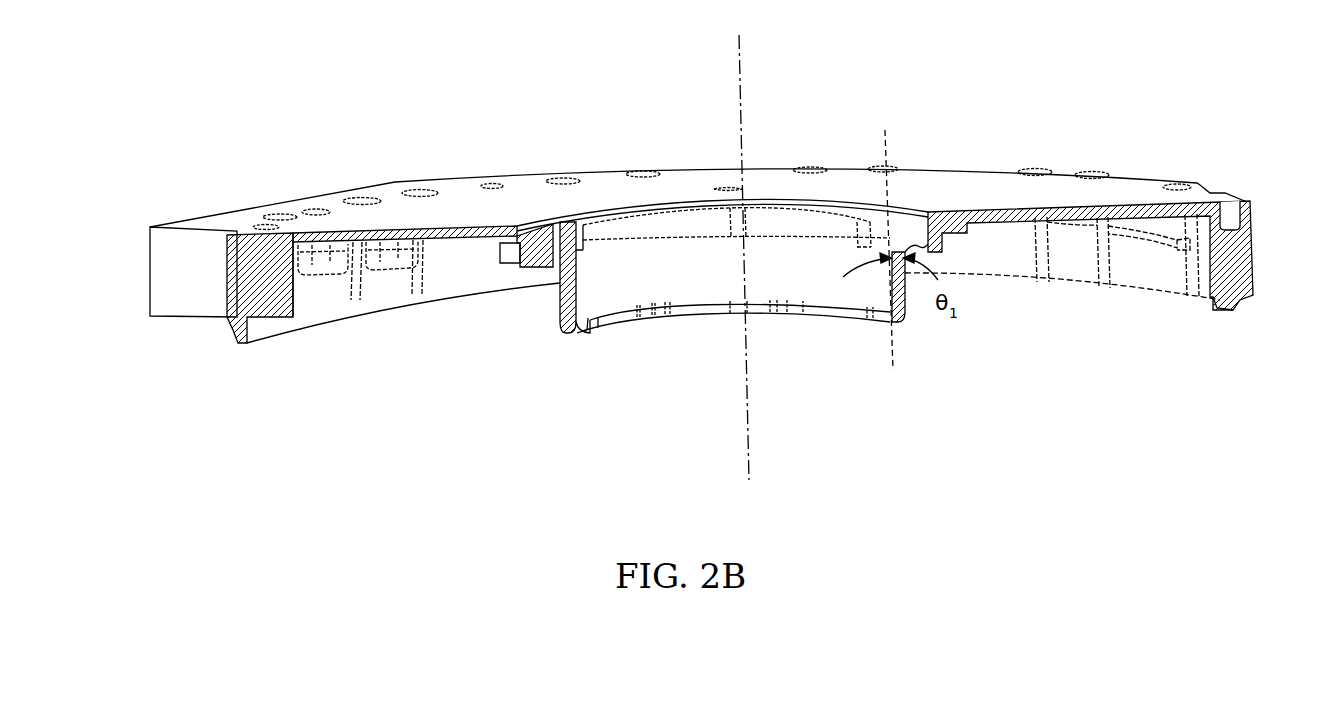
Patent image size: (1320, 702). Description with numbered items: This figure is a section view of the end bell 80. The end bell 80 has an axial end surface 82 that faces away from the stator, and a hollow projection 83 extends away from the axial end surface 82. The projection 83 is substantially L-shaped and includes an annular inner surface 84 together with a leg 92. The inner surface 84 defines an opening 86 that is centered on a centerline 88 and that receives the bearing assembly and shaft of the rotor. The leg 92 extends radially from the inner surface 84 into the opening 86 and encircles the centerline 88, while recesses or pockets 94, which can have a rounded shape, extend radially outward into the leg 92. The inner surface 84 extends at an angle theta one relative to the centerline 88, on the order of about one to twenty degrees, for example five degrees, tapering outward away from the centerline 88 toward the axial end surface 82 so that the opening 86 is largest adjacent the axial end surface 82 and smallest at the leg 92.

The end bell 80 is at (318, 140).
The axial end surface 82 is at (430, 215).
The hollow projection 83 is at (560, 290).
The inner surface 84 is at (565, 325).
The opening 86 is at (688, 230).
The centerline 88 is at (745, 97).
The leg 92 is at (578, 336).
The pockets 94 is at (653, 321).